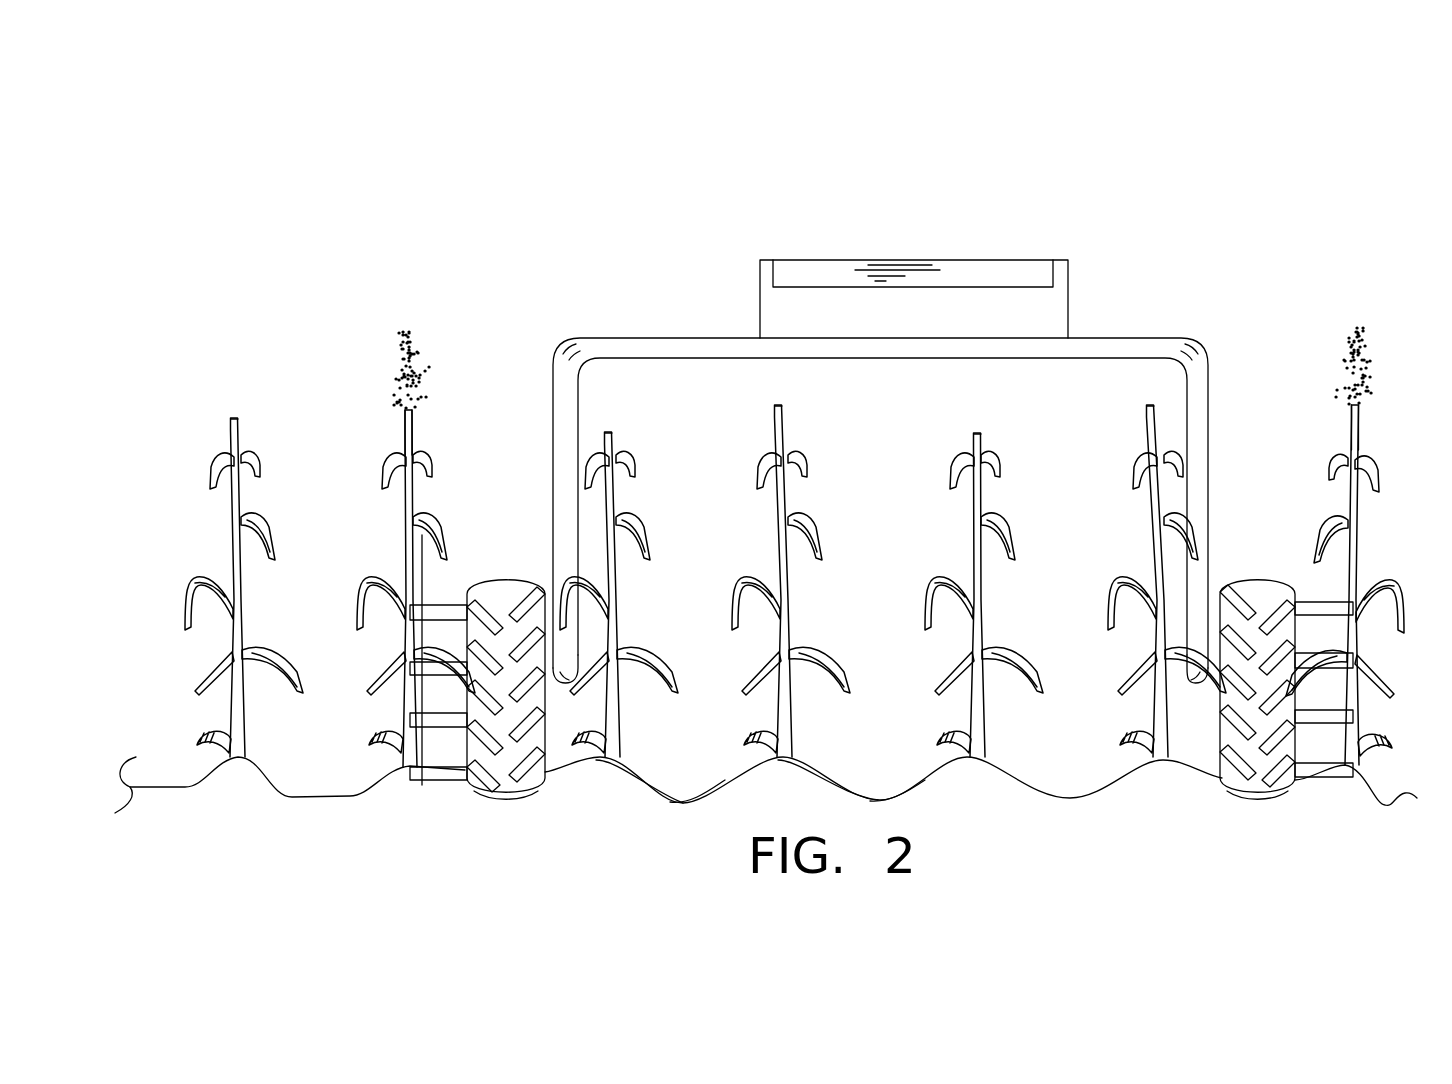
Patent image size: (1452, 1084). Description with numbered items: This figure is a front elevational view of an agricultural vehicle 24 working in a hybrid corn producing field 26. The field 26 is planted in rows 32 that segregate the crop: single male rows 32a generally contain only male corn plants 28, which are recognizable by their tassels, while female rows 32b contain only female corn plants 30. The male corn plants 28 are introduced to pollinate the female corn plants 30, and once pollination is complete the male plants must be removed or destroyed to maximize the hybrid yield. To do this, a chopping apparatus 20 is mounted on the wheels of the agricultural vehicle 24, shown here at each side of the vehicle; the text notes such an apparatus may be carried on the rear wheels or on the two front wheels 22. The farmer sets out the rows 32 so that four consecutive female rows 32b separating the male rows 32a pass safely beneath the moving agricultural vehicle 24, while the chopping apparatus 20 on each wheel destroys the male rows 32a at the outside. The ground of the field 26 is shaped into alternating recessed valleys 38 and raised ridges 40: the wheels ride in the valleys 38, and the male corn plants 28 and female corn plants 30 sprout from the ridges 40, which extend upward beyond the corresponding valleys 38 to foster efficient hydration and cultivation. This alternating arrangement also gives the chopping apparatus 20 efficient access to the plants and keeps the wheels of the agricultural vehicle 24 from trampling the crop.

The chopping apparatus 20 is at (412, 790).
The front wheels 22 is at (462, 600).
The agricultural vehicle 24 is at (990, 238).
The corn field 26 is at (695, 248).
The male corn plants 28 is at (428, 355).
The female corn plants 30 is at (222, 430).
The rows 32 is at (787, 496).
The male rows 32a is at (375, 337).
The female rows 32b is at (248, 420).
The valleys 38 is at (680, 797).
The ridges 40 is at (635, 770).